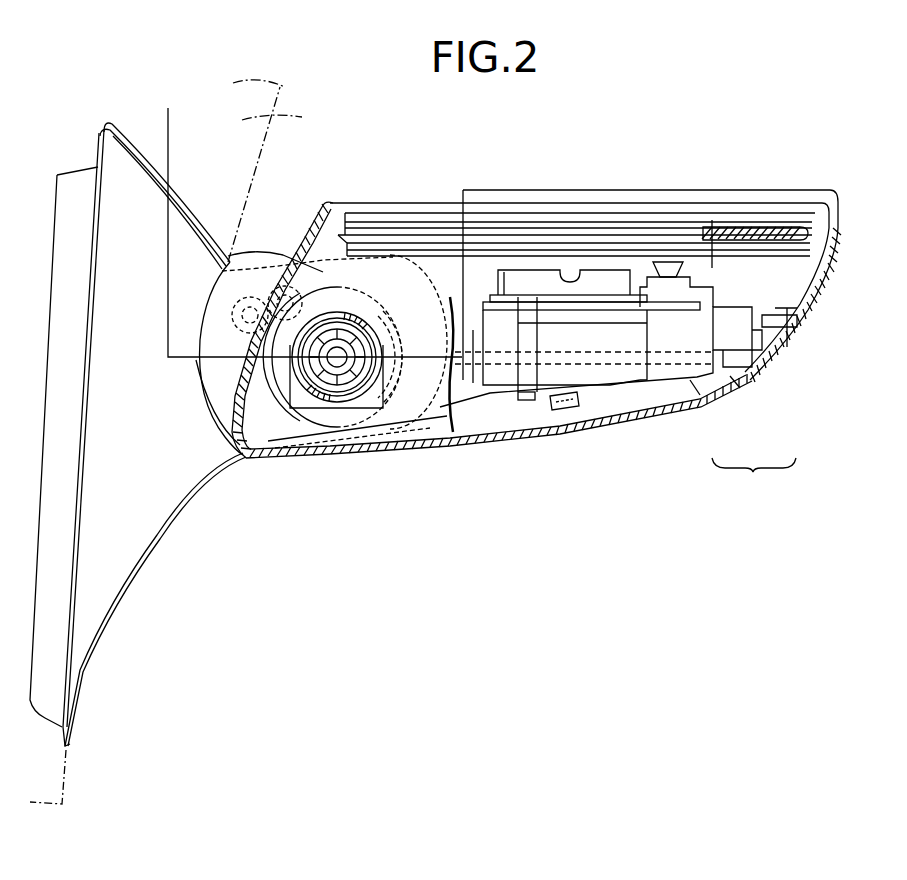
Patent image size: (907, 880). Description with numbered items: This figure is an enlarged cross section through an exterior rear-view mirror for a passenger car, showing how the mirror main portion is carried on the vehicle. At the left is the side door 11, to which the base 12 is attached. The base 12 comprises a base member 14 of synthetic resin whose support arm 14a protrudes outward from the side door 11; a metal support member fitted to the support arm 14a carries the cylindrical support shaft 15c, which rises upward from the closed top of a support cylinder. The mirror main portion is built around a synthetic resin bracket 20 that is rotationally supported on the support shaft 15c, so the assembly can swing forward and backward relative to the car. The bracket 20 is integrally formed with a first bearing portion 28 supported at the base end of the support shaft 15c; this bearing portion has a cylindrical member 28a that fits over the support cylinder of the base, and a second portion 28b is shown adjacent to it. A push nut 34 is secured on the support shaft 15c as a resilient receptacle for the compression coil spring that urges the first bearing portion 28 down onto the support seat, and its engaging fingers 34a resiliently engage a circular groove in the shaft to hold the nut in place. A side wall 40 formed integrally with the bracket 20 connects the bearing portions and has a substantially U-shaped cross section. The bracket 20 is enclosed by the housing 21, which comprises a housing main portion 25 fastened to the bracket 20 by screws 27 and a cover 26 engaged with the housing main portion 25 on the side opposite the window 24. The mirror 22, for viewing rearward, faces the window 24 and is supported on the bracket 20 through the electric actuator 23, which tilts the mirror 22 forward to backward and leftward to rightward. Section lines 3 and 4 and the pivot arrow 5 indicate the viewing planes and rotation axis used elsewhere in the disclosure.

The section line 3- 3 is at (565, 172).
The section line 4- 4 is at (170, 108).
The pivot shaft 5 is at (363, 440).
The side door 11 is at (280, 171).
The base 12 is at (172, 540).
The base member 14 is at (88, 632).
The support arm 14a is at (323, 260).
The support shaft 15c is at (382, 297).
The bracket 20 is at (650, 365).
The housing 21 is at (754, 480).
The mirror 22 is at (722, 230).
The electric actuator 23 is at (528, 273).
The window 24 is at (800, 207).
The housing main portion 25 is at (698, 382).
The cover 26 is at (737, 383).
The screws 27 is at (520, 395).
The first bearing portion 28 is at (300, 262).
The cylindrical member 28a is at (316, 440).
The frame side wall 28b is at (252, 403).
The push nut 34 is at (400, 447).
The engaging fingers 34a is at (322, 412).
The side wall 40 is at (262, 380).